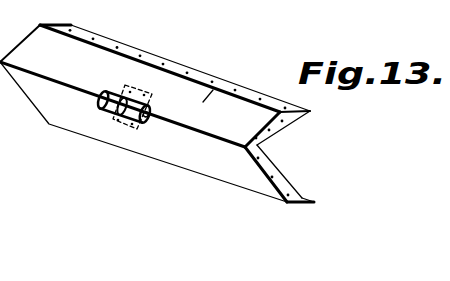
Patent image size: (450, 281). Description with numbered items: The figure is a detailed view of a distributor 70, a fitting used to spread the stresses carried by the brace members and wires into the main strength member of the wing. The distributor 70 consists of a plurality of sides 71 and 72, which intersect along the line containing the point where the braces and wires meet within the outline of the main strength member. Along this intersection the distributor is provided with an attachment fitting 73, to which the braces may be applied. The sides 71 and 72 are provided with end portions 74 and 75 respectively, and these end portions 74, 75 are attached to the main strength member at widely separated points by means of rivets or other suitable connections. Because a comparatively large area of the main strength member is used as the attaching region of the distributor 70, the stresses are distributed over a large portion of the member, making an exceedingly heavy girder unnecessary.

The distributor 70 is at (232, 116).
The side 71 is at (178, 143).
The side 72 is at (231, 116).
The attachment fitting 73 is at (126, 134).
The end portion 74 is at (277, 173).
The end portion 75 is at (288, 111).